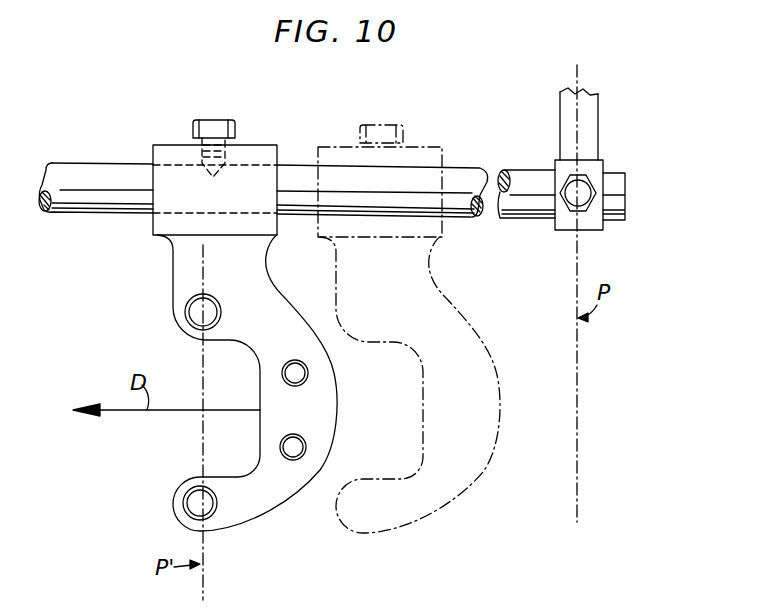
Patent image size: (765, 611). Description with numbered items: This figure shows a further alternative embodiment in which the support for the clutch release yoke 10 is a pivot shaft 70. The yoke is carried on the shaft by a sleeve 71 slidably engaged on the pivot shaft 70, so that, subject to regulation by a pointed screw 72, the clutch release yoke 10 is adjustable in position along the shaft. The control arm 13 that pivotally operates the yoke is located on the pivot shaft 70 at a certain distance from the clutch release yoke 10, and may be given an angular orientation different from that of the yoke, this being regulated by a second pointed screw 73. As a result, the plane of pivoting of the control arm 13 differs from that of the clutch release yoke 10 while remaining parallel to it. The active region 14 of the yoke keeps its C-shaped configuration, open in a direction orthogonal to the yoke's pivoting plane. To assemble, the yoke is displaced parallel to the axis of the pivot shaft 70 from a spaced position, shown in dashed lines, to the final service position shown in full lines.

The clutch release yoke 10 is at (297, 384).
The control arm 13 is at (550, 170).
The active region 14 is at (335, 439).
The pivot shaft 70 is at (96, 162).
The sleeve 71 is at (169, 150).
The pointed screw 72 is at (212, 120).
The pointed screw 73 is at (570, 208).